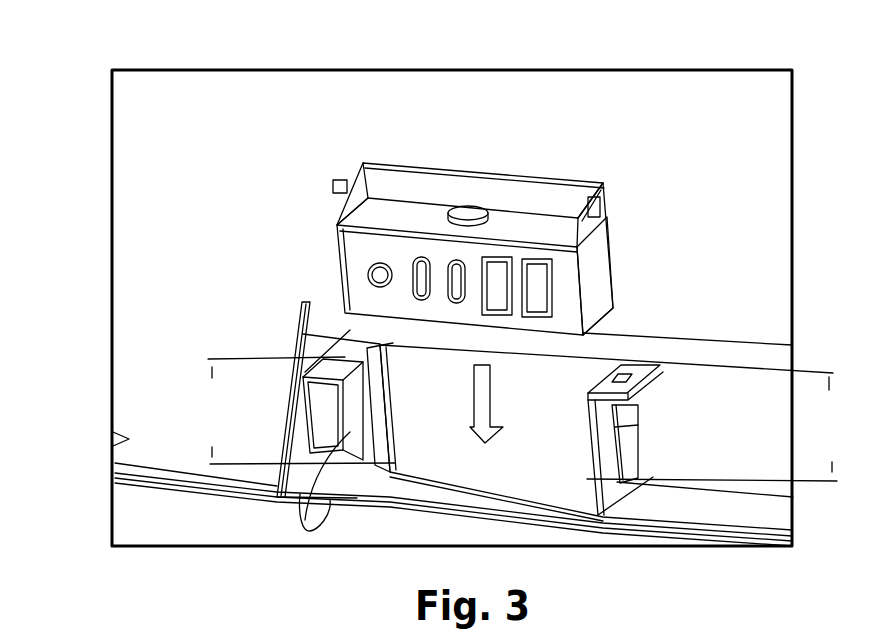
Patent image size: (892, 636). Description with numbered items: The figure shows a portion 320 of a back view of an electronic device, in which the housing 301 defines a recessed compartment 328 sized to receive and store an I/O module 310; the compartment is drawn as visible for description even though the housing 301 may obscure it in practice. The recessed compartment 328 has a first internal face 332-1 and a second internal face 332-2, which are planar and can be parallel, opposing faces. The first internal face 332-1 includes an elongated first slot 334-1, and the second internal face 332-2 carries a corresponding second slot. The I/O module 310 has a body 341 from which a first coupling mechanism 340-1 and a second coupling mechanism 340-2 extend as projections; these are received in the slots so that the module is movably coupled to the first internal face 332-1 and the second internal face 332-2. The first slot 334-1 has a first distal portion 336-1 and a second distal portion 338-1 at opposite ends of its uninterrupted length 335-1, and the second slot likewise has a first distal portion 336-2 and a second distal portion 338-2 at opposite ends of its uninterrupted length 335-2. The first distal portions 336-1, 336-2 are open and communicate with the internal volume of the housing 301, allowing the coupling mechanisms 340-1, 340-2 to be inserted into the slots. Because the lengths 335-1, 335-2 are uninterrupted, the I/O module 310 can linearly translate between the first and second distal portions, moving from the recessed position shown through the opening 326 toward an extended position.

The housing 301 is at (128, 229).
The portion 320 is at (276, 63).
The I/O module 310 is at (402, 155).
The second coupling mechanism 340-2 is at (333, 186).
The first coupling mechanism 340-1 is at (604, 190).
The body 341 is at (588, 257).
The opening 326 is at (472, 489).
The recessed compartment 328 is at (519, 372).
The length of the second slot 335-2 is at (285, 410).
The length of the first slot 335-1 is at (832, 424).
The second internal face 332-2 is at (300, 512).
The first distal portion of the second slot 336-2 is at (355, 350).
The second distal portion of the second slot 338-2 is at (385, 472).
The first internal face 332-1 is at (612, 503).
The first slot 334-1 is at (620, 427).
The first distal portion of the first slot 336-1 is at (617, 380).
The second distal portion of the first slot 338-1 is at (638, 478).